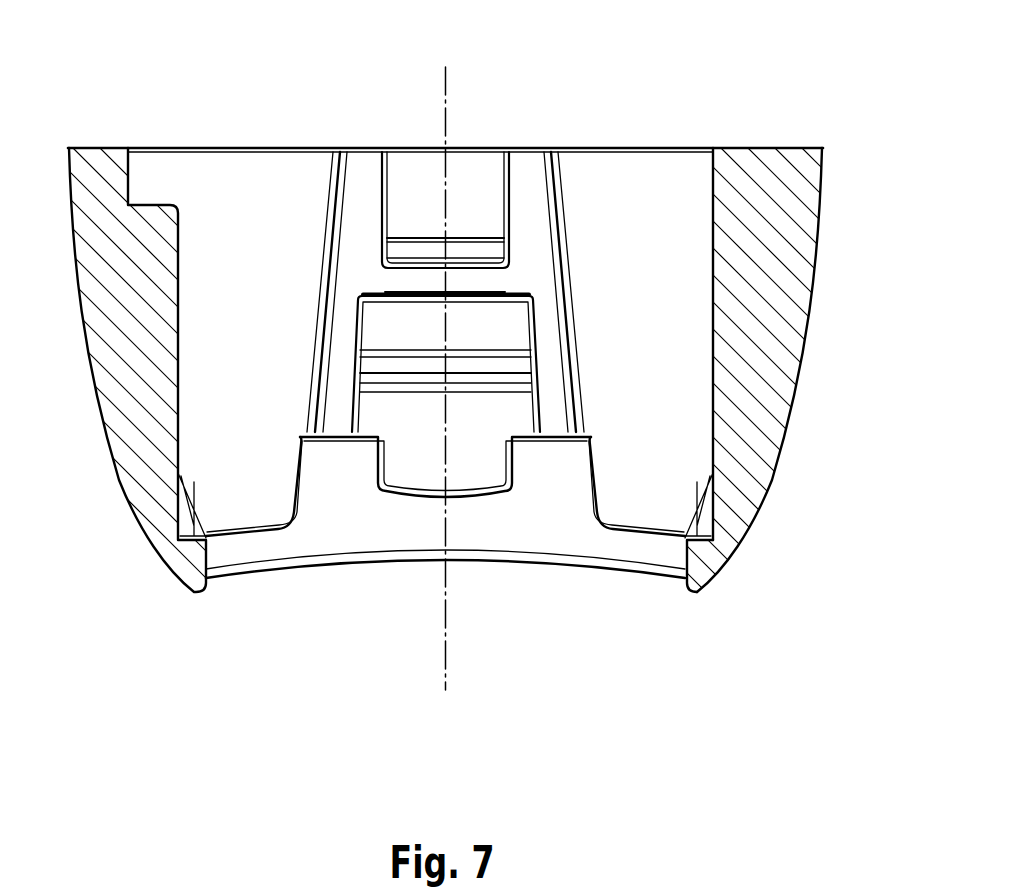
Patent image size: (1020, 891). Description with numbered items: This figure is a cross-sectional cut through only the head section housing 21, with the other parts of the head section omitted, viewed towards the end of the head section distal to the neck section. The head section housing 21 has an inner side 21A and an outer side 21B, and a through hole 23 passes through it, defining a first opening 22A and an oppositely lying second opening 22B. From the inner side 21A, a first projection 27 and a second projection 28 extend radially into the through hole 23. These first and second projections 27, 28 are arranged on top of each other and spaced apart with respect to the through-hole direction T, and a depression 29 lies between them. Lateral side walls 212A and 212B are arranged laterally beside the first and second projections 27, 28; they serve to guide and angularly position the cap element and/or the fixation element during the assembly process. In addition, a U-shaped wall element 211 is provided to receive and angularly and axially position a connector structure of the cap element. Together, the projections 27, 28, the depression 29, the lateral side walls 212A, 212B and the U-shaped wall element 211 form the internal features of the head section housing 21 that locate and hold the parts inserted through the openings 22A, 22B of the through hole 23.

The head section housing 21 is at (771, 345).
The inner side 21A is at (712, 205).
The outer side 21B is at (822, 205).
The first opening 22A is at (375, 624).
The second opening 22B is at (375, 100).
The through hole 23 is at (297, 624).
The first projection 27 is at (418, 372).
The second projection 28 is at (418, 282).
The depression 29 is at (420, 325).
The U-shaped wall element 211 is at (545, 477).
The lateral side wall 212A is at (362, 236).
The lateral side wall 212B is at (529, 237).
The through-hole direction T is at (446, 90).